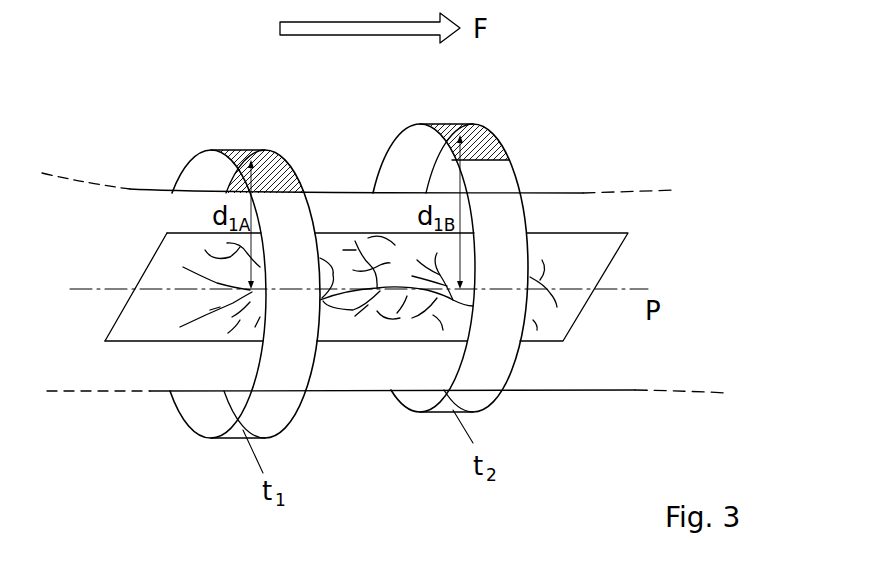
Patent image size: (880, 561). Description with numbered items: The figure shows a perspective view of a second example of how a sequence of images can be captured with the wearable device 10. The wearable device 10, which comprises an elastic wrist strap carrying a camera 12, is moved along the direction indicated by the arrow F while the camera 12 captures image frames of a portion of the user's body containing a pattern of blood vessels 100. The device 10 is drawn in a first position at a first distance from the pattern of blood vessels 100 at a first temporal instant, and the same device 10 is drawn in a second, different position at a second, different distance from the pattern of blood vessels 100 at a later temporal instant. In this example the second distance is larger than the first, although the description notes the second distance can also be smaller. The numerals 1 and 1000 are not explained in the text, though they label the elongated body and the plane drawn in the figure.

The tubular body / vessel 1 is at (620, 400).
The ring 10 is at (195, 177).
The ring cross-section 12 is at (257, 155).
The vascular network 100 is at (368, 312).
The plane 1000 is at (594, 268).